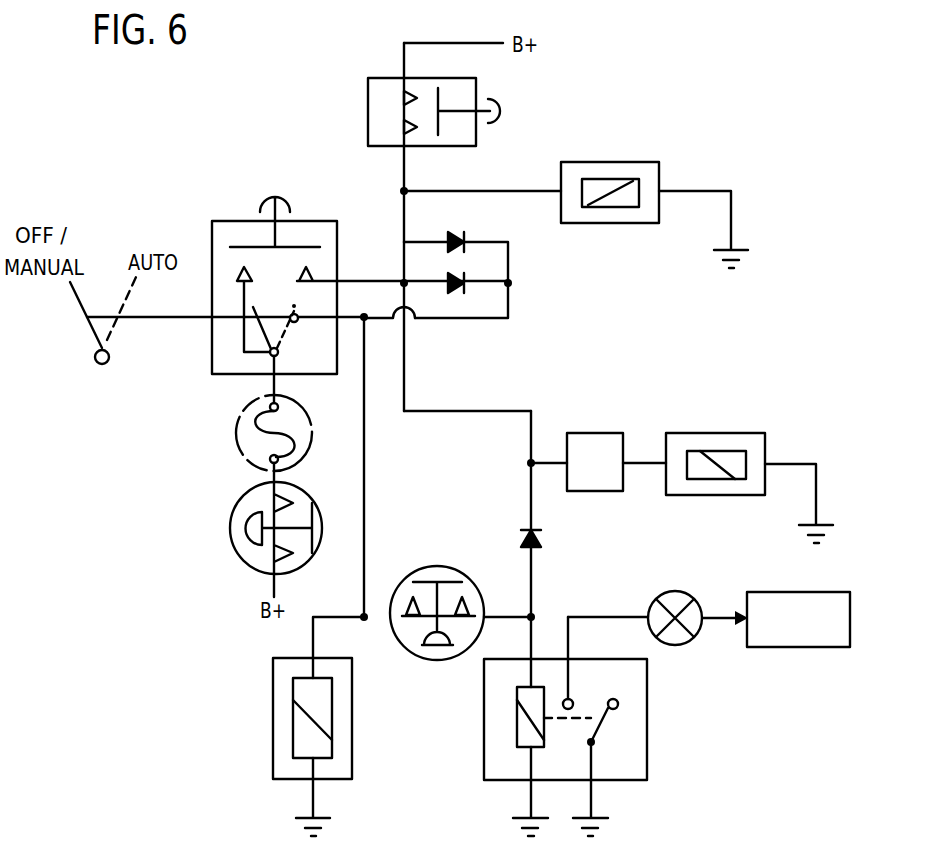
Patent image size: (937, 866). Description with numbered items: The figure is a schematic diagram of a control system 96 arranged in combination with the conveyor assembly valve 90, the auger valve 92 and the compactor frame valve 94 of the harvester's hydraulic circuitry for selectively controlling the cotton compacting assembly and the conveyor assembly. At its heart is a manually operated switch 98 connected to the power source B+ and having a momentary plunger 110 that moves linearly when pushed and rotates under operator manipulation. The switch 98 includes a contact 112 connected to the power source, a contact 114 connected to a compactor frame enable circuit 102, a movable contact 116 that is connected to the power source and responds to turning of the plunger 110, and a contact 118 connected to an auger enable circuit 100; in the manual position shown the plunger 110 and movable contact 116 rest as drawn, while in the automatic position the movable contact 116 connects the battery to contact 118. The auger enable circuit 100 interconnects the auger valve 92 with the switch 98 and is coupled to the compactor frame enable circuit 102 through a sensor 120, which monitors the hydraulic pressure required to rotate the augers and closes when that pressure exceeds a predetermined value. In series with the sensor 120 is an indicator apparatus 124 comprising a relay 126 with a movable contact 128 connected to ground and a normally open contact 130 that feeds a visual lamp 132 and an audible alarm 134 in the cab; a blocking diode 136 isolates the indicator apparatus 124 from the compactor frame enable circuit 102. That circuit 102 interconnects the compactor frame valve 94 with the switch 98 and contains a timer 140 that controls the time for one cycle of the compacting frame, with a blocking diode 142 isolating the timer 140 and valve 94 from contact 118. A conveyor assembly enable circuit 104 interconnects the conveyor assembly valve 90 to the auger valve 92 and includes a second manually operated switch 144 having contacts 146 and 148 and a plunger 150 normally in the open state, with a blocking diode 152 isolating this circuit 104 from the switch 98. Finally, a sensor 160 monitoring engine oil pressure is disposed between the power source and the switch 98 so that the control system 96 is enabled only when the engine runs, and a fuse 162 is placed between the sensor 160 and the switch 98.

The conveyor assembly valve 90 is at (618, 162).
The auger valve 92 is at (273, 705).
The compactor frame valve 94 is at (727, 433).
The control system 96 is at (784, 294).
The manually operated switch 98 is at (236, 212).
The auger enable circuit 100 is at (366, 517).
The compactor frame enable circuit 102 is at (368, 280).
The conveyor assembly enable circuit 104 is at (398, 203).
The momentary plunger 110 is at (270, 197).
The contact 112 is at (240, 267).
The contact 114 is at (312, 277).
The movable contact 116 is at (256, 330).
The contact 118 is at (297, 324).
The sensor 120 is at (422, 650).
The indicator apparatus 124 is at (462, 754).
The relay 126 is at (484, 707).
The movable contact 128 is at (603, 727).
The normally open contact 130 is at (575, 700).
The lamp 132 is at (675, 591).
The alarm 134 is at (790, 647).
The blocking diode 136 is at (543, 540).
The timer 140 is at (588, 433).
The blocking diode 142 is at (460, 293).
The manually operated switch 144 is at (356, 94).
The contact 146 is at (404, 98).
The contact 148 is at (404, 127).
The plunger 150 is at (498, 103).
The blocking diode 152 is at (452, 237).
The sensor 160 is at (233, 520).
The fuse 162 is at (240, 445).